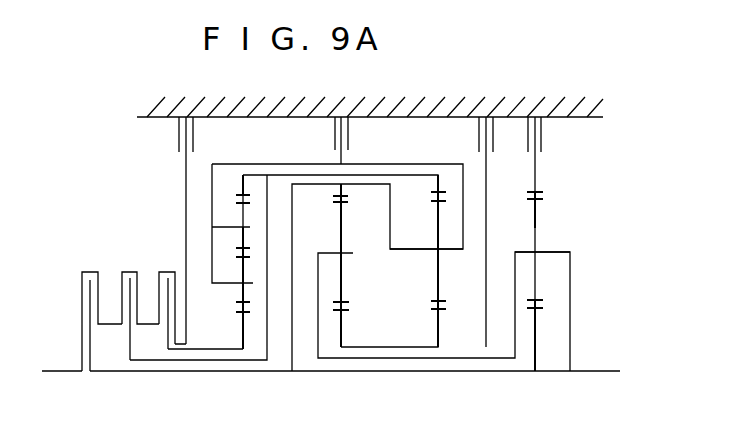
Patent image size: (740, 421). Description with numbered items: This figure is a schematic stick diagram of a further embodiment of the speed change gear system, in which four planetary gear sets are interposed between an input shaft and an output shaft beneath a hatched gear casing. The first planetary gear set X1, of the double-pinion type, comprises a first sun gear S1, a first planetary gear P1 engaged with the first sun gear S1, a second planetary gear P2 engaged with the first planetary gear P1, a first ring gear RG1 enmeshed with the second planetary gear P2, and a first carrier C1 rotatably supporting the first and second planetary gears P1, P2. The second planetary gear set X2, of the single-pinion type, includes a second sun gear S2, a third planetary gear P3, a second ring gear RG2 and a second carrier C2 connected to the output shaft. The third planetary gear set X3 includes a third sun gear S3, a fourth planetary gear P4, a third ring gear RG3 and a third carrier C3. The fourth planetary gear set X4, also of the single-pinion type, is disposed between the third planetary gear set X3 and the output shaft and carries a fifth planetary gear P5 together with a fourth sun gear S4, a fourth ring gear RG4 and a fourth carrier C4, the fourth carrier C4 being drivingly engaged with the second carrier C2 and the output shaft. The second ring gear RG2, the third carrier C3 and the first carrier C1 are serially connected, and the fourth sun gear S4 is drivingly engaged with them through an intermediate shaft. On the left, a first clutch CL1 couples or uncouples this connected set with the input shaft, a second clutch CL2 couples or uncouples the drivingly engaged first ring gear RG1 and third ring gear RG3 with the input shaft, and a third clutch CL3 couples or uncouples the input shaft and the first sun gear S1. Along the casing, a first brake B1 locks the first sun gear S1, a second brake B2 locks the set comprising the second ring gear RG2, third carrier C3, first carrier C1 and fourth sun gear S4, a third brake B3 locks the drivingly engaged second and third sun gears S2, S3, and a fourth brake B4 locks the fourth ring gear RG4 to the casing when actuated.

The first clutch CL1 is at (75, 306).
The second clutch CL2 is at (125, 301).
The third clutch CL3 is at (156, 295).
The first brake B1 is at (200, 230).
The second brake B2 is at (357, 140).
The third brake B3 is at (499, 232).
The fourth brake B4 is at (549, 154).
The first ring gear RG1 is at (243, 186).
The second ring gear RG2 is at (344, 191).
The third ring gear RG3 is at (433, 189).
The fourth ring gear RG4 is at (535, 178).
The first planetary gear P1 is at (242, 289).
The second planetary gear P2 is at (245, 212).
The third planetary gear P3 is at (341, 283).
The fourth planetary gear P4 is at (437, 263).
The fifth planetary gear P5 is at (535, 228).
The first carrier C1 is at (223, 229).
The second carrier C2 is at (333, 250).
The third carrier C3 is at (408, 251).
The fourth carrier C4 is at (553, 250).
The first sun gear S1 is at (243, 328).
The second sun gear S2 is at (343, 320).
The third sun gear S3 is at (440, 320).
The fourth sun gear S4 is at (537, 322).
The first planetary gear set X1 is at (240, 322).
The second planetary gear set X2 is at (337, 320).
The third planetary gear set X3 is at (430, 320).
The fourth planetary gear set X4 is at (532, 318).